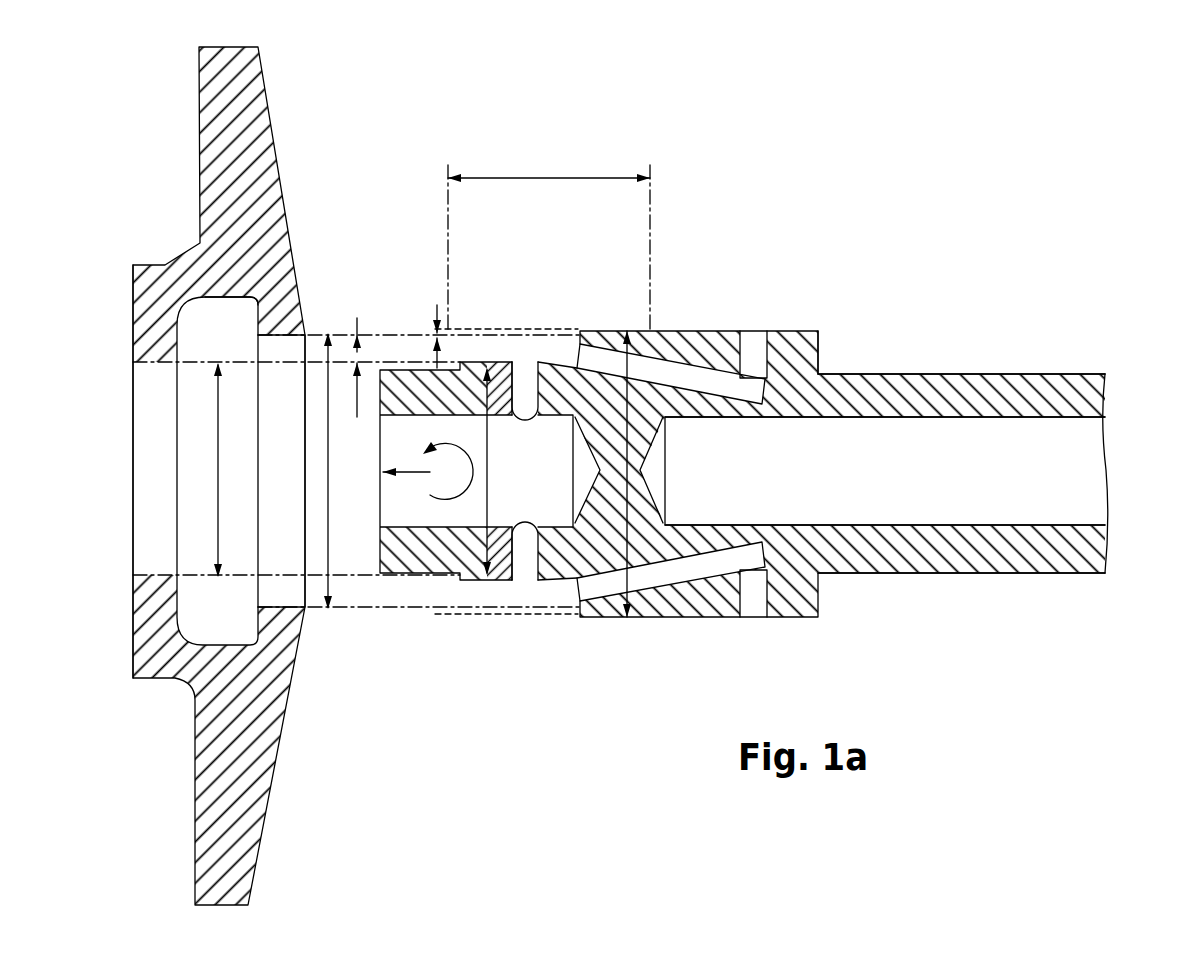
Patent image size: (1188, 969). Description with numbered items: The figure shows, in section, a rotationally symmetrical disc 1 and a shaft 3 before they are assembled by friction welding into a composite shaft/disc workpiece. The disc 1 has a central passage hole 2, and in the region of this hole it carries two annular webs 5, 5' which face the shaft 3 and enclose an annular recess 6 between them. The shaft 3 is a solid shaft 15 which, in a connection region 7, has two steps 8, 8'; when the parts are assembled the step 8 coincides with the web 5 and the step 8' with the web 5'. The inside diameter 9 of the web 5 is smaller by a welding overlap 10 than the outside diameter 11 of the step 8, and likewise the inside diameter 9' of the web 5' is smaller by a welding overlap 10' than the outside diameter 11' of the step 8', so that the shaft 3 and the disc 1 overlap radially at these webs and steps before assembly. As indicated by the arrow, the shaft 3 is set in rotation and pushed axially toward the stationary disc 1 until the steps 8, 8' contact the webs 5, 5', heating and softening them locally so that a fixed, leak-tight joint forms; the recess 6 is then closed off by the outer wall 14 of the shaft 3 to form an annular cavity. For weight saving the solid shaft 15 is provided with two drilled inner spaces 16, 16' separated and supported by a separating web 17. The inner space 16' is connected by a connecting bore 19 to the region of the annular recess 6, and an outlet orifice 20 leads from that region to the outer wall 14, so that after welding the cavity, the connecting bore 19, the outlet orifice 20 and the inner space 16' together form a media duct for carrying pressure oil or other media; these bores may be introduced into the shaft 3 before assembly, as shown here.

The disc 1 is at (255, 132).
The passage hole 2 is at (188, 397).
The shaft 3 is at (937, 383).
The annular web 5 is at (272, 471).
The annular web 5' is at (419, 448).
The annular recess 6 is at (232, 315).
The connection region 7 is at (549, 239).
The step 8 is at (490, 432).
The step 8' is at (671, 434).
The inside diameter 9 is at (153, 470).
The inside diameter 9' is at (349, 494).
The welding overlap 10 is at (383, 351).
The welding overlap 10' is at (460, 317).
The outside diameter 11 is at (470, 511).
The outside diameter 11' is at (647, 493).
The outer wall 14 is at (503, 365).
The solid shaft 15 is at (857, 383).
The inner space 16 is at (885, 525).
The inner space 16' is at (446, 508).
The separating web 17 is at (600, 480).
The connecting bore 19 is at (530, 368).
The outlet orifice 20 is at (652, 363).